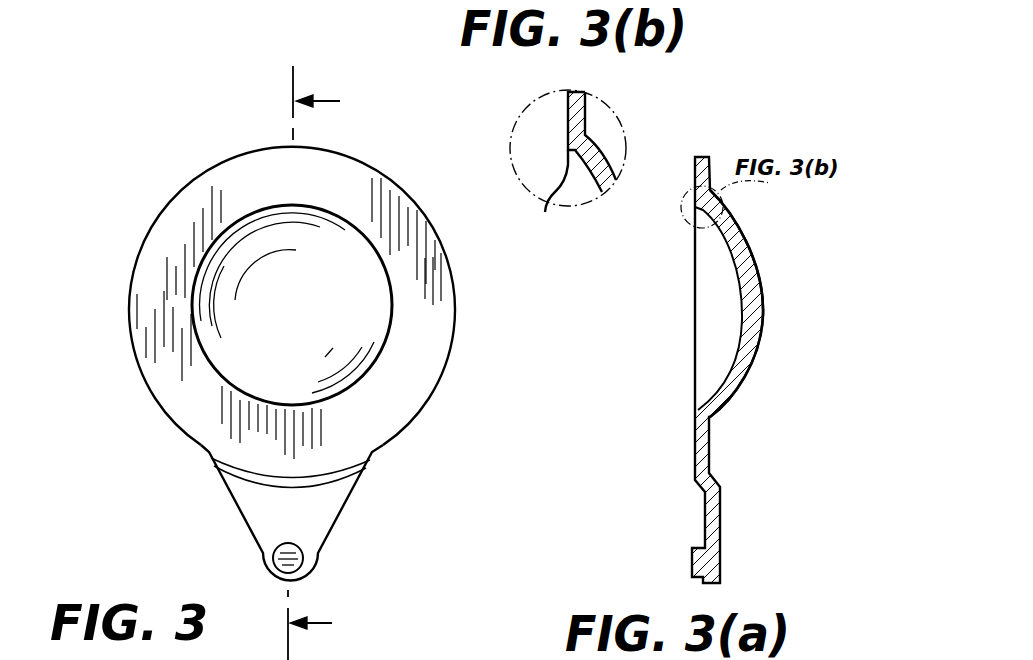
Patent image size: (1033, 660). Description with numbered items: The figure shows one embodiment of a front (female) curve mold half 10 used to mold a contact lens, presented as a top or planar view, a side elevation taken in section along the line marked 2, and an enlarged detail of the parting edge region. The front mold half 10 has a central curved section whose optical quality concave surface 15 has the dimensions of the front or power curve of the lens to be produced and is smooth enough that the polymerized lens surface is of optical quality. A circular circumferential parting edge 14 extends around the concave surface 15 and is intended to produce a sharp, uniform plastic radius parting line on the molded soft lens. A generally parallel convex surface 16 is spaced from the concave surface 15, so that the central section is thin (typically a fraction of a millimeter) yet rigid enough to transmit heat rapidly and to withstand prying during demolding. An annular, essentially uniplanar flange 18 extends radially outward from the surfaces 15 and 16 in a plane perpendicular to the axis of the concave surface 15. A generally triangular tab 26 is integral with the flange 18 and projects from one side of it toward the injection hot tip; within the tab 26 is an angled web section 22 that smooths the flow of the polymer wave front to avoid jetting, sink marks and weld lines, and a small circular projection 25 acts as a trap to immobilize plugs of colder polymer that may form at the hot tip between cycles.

In FIG. 3, the front mold half 10 is at (131, 246).
In FIG. 3A, the front mold half 10 is at (675, 321).
In FIG. 3A, the circular circumferential parting edge 14 is at (697, 216).
In FIG. 3B, the circular circumferential parting edge 14 is at (641, 73).
In FIG. 3, the optical quality concave surface 15 is at (305, 322).
In FIG. 3A, the optical quality concave surface 15 is at (745, 340).
In FIG. 3A, the convex surface 16 is at (767, 286).
In FIG. 3, the annular flange 18 is at (381, 205).
In FIG. 3A, the annular flange 18 is at (697, 166).
In FIG. 3, the angled web section 22 is at (323, 478).
In FIG. 3A, the angled web section 22 is at (713, 478).
In FIG. 3, the small circular projection 25 is at (303, 552).
In FIG. 3A, the small circular projection 25 is at (692, 560).
In FIG. 3, the triangular tab 26 is at (242, 497).
In FIG. 3A, the triangular tab 26 is at (705, 502).
In FIG. 3, the section line 2- 2 is at (324, 363).